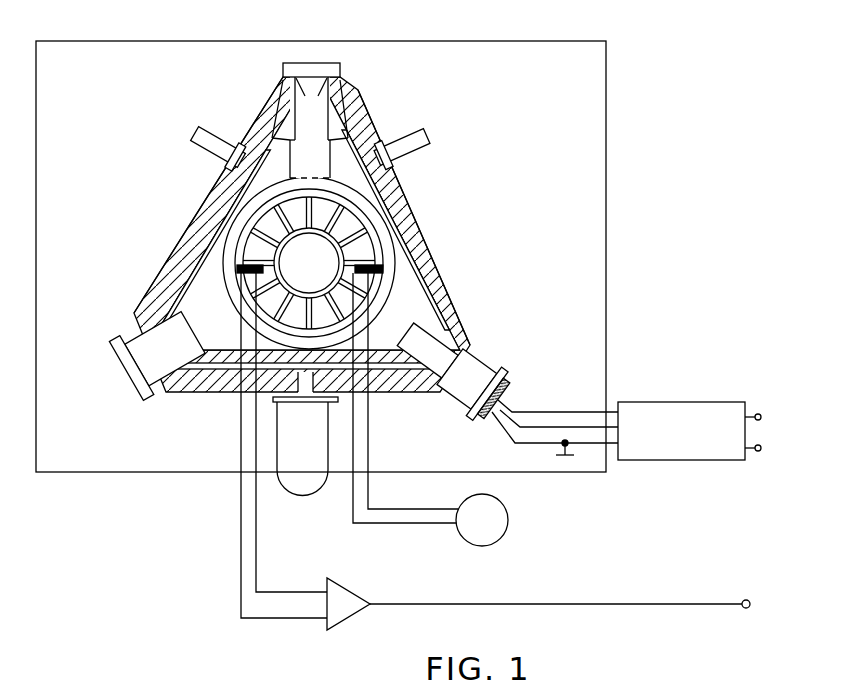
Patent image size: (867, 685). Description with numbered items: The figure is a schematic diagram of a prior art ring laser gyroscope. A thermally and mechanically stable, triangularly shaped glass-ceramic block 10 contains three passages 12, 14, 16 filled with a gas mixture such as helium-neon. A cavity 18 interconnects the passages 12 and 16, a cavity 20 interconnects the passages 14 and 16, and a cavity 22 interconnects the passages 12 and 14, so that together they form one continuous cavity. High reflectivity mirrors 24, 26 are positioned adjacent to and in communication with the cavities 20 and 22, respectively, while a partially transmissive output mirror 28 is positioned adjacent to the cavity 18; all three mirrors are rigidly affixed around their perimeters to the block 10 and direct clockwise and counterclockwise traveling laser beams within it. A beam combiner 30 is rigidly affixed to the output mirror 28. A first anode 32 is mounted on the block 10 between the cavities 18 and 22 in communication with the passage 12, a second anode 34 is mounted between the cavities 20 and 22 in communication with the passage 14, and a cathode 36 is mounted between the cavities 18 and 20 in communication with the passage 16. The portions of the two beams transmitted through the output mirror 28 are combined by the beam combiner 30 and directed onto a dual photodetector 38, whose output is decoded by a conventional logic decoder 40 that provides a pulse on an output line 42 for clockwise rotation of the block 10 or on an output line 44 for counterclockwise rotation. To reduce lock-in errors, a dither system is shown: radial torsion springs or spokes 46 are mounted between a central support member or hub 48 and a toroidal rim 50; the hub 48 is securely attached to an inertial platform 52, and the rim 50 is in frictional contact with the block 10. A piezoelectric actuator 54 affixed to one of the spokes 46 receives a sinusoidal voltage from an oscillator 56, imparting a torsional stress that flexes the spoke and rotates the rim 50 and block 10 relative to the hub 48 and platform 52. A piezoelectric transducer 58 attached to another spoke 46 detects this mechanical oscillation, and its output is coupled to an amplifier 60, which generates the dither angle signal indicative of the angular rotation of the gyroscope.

The glass-ceramic block 10 is at (425, 243).
The passage 12 is at (403, 222).
The passage 14 is at (208, 236).
The passage 16 is at (228, 370).
The cavity 18 is at (492, 336).
The cavity 20 is at (165, 352).
The cavity 22 is at (317, 112).
The high reflectivity mirror 24 is at (135, 367).
The high reflectivity mirror 26 is at (310, 63).
The partially transmissive output mirror 28 is at (507, 343).
The beam combiner 30 is at (503, 371).
The first anode 32 is at (414, 146).
The second anode 34 is at (214, 133).
The cathode 36 is at (299, 494).
The dual photodetector 38 is at (503, 394).
The logic decoder 40 is at (653, 402).
The output line 42 is at (756, 412).
The output line 44 is at (755, 453).
The spokes 46 is at (244, 197).
The hub 48 is at (296, 294).
The toroidal rim 50 is at (370, 284).
The inertial platform 52 is at (540, 105).
The piezoelectric actuator 54 is at (384, 268).
The oscillator 56 is at (508, 523).
The piezoelectric transducer 58 is at (280, 256).
The amplifier 60 is at (350, 594).